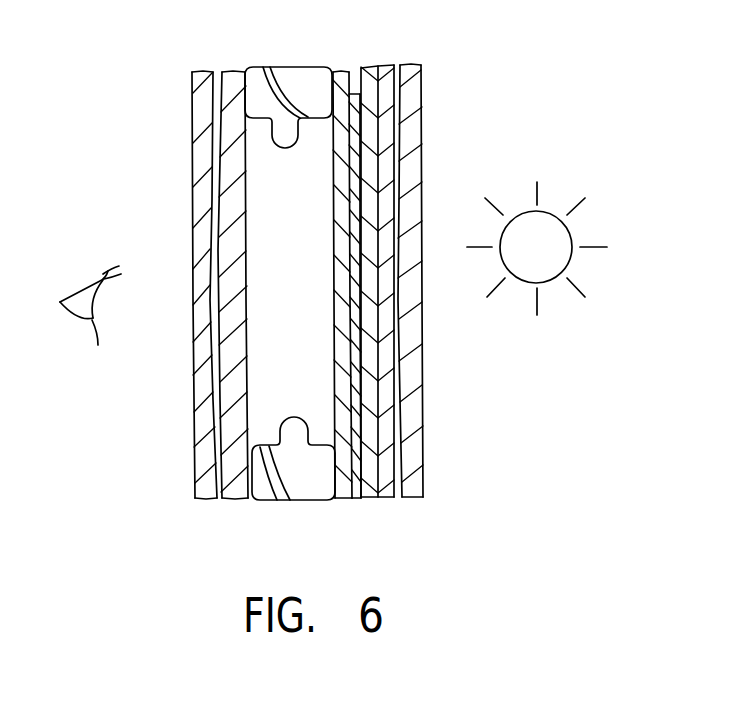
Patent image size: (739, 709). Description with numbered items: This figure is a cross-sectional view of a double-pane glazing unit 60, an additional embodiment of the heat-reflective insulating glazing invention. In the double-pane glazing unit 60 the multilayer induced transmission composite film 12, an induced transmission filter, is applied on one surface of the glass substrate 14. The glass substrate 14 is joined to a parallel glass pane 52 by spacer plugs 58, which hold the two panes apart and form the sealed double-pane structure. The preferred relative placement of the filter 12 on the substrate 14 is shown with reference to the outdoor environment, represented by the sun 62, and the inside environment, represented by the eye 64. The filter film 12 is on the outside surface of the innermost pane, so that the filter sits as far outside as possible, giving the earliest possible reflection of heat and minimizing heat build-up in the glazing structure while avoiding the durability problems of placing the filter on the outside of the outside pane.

The multilayer induced transmission composite film 12 is at (388, 504).
The transparent substrate 14 is at (422, 388).
The parallel glass pane 52 is at (202, 358).
The spacer plugs 58 is at (307, 78).
The double-pane glazing unit 60 is at (182, 177).
The sun 62 is at (546, 214).
The eye 64 is at (84, 286).